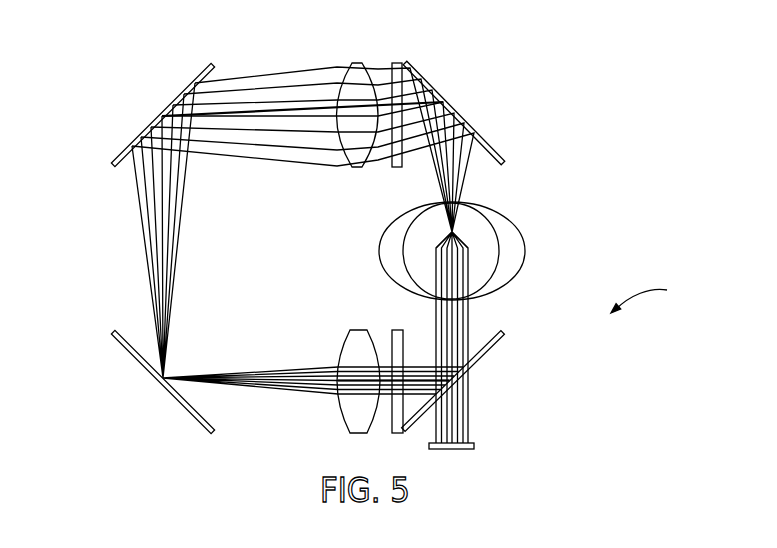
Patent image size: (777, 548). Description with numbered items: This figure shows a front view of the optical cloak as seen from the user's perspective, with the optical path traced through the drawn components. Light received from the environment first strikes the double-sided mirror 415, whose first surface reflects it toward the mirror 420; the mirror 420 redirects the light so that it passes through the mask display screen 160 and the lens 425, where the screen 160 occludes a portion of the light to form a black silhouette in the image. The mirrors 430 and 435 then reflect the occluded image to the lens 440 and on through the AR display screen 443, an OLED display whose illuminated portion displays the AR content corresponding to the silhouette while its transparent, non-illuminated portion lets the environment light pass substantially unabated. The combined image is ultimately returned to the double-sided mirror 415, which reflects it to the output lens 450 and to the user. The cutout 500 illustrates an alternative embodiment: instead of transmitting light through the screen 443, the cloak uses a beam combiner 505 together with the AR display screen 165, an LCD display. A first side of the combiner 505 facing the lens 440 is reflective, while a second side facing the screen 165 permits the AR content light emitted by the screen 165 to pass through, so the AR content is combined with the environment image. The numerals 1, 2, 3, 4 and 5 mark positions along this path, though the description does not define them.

The focal point / image position 1 is at (463, 238).
The beam combiner 2 is at (453, 381).
The mirror 3 is at (95, 367).
The mirror 4 is at (162, 114).
The mirror 5 is at (454, 113).
The mask display screen 160 is at (398, 63).
The AR display screen 165 is at (474, 446).
The double-sided mirror 415 is at (383, 228).
The mirror 420 is at (499, 113).
The lens 425 is at (353, 63).
The mirror 430 is at (138, 114).
The mirror 435 is at (137, 381).
The lens 440 is at (340, 416).
The AR display screen 443 is at (393, 330).
The output lens 450 is at (503, 255).
The cutout 500 is at (661, 296).
The beam combiner 505 is at (520, 381).